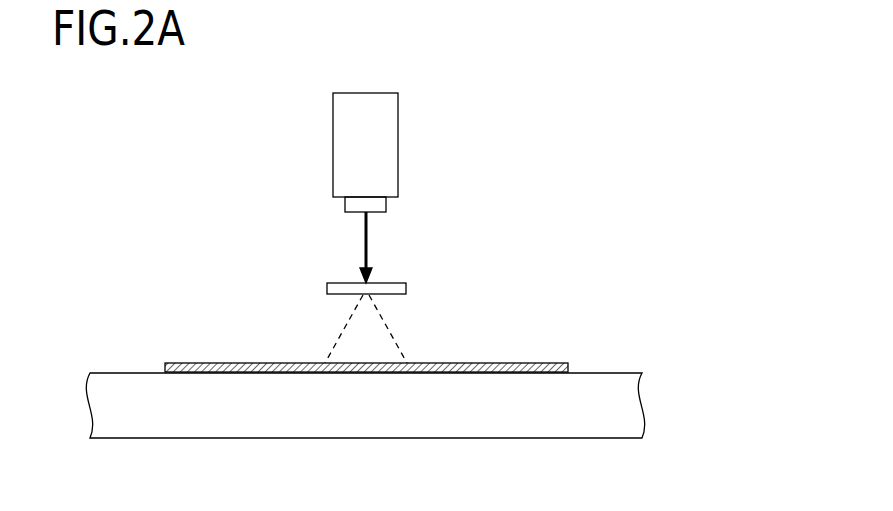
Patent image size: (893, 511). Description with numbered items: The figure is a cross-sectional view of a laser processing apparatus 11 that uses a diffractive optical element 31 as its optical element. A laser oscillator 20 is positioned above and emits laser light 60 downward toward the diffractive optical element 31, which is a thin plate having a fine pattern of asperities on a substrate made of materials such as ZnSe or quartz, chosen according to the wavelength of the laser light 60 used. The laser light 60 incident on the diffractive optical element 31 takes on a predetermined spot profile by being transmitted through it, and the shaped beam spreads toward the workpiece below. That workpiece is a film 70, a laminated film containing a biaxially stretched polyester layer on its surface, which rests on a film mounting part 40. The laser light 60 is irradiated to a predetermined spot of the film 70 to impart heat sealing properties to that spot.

The laser processing apparatus 11 is at (118, 115).
The laser oscillator 20 is at (388, 157).
The laser light 60 is at (380, 338).
The diffractive optical element 31 is at (337, 288).
The film 70 is at (493, 363).
The film mounting part 40 is at (625, 410).